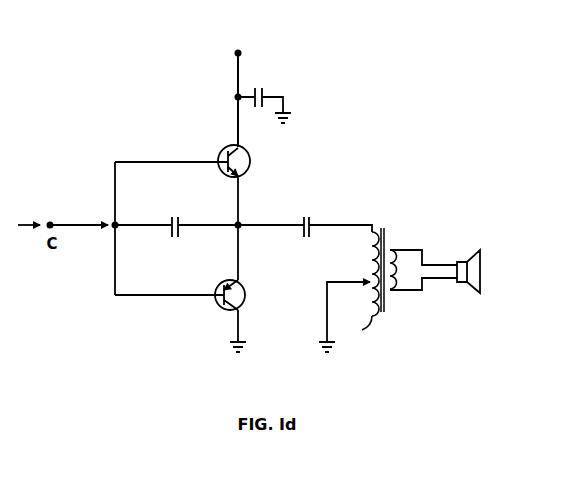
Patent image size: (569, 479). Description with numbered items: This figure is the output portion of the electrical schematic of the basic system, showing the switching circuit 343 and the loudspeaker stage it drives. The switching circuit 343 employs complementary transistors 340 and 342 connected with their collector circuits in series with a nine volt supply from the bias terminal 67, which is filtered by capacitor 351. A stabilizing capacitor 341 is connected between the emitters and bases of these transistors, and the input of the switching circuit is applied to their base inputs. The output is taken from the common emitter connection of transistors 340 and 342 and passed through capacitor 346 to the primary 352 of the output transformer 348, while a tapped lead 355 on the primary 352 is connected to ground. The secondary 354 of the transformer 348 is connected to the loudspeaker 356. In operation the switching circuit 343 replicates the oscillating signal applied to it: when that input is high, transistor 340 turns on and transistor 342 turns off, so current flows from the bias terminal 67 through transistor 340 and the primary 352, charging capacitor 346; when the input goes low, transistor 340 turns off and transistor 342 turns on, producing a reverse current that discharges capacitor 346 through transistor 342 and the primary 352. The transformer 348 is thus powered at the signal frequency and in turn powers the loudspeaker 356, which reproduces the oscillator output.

The bias terminal 67 is at (235, 54).
The filter capacitor 351 is at (266, 90).
The transistor 340 is at (232, 147).
The stabilizing capacitor 341 is at (181, 220).
The transistor 342 is at (245, 291).
The switching circuit 343 is at (313, 182).
The capacitor 346 is at (313, 220).
The output transformer 348 is at (385, 236).
The primary 352 is at (375, 293).
The tapped lead 355 is at (368, 280).
The secondary 354 is at (400, 292).
The loudspeaker 356 is at (481, 264).